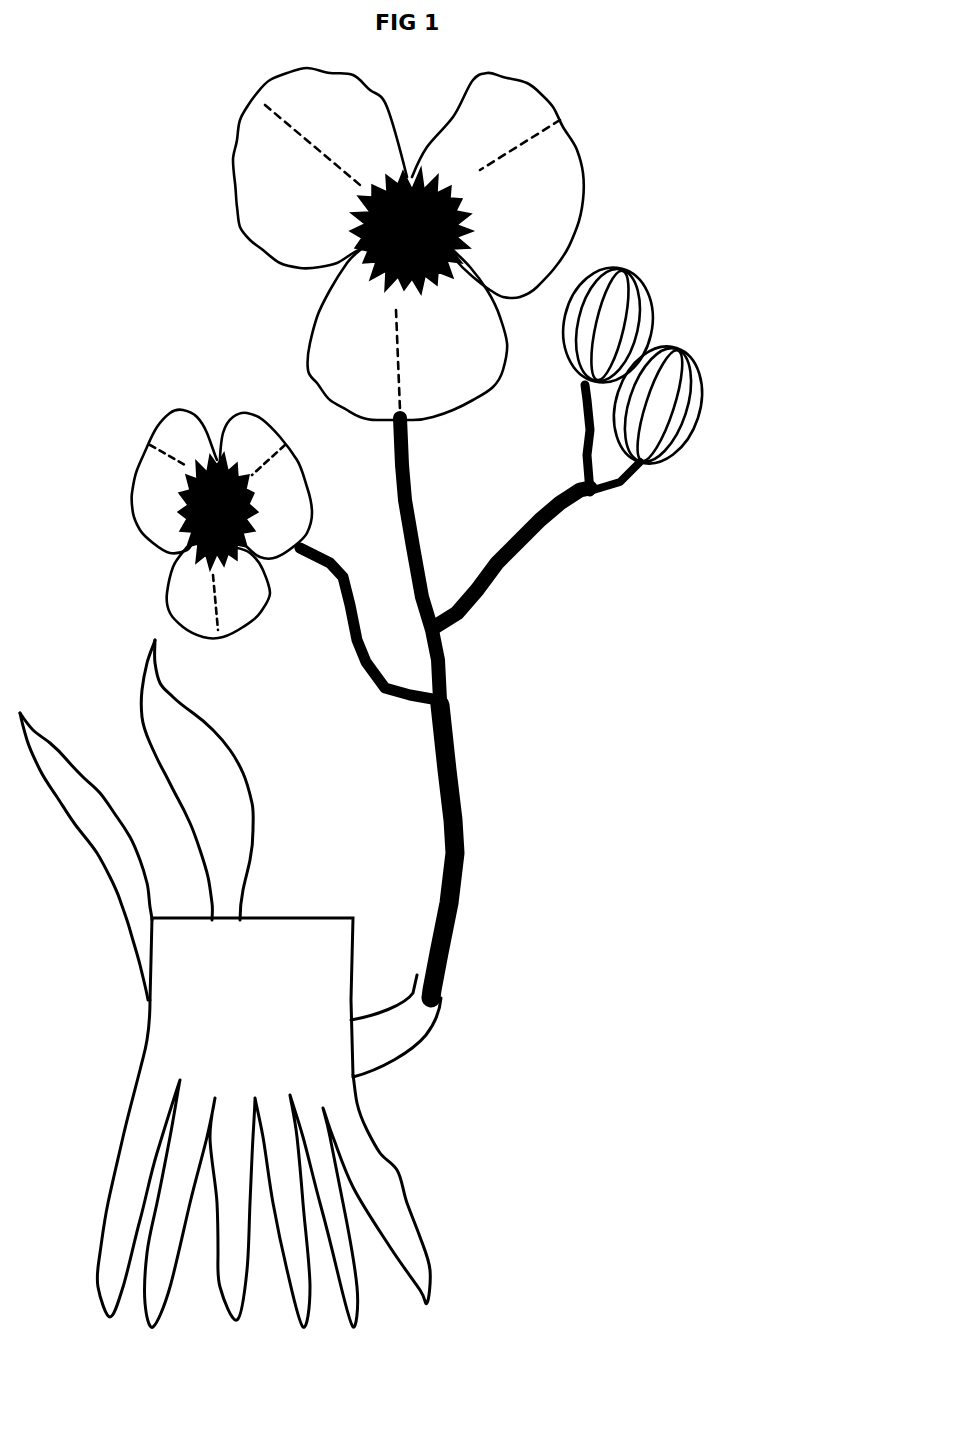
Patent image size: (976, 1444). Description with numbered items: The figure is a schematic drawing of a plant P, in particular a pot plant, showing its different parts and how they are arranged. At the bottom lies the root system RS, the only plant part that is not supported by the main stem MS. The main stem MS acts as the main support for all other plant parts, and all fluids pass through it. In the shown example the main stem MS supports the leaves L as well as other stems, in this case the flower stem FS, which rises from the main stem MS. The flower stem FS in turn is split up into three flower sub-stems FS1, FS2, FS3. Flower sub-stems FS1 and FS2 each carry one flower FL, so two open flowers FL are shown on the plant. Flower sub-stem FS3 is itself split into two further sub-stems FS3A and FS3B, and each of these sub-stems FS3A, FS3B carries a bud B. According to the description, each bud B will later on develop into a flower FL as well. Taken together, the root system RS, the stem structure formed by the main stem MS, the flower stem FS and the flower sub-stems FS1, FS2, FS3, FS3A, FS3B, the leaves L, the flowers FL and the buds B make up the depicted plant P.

The flower FL is at (528, 107).
The bud B is at (680, 367).
The sub-stem FS3B is at (577, 445).
The sub-stem FS3A is at (633, 477).
The flower sub-stem FS3 is at (510, 552).
The flower sub-stem FS2 is at (407, 535).
The flower sub-stem FS1 is at (350, 638).
The flower stem FS is at (464, 840).
The leaf L is at (72, 780).
The main stem MS is at (180, 1035).
The root system RS is at (582, 1092).
The plant P is at (629, 882).